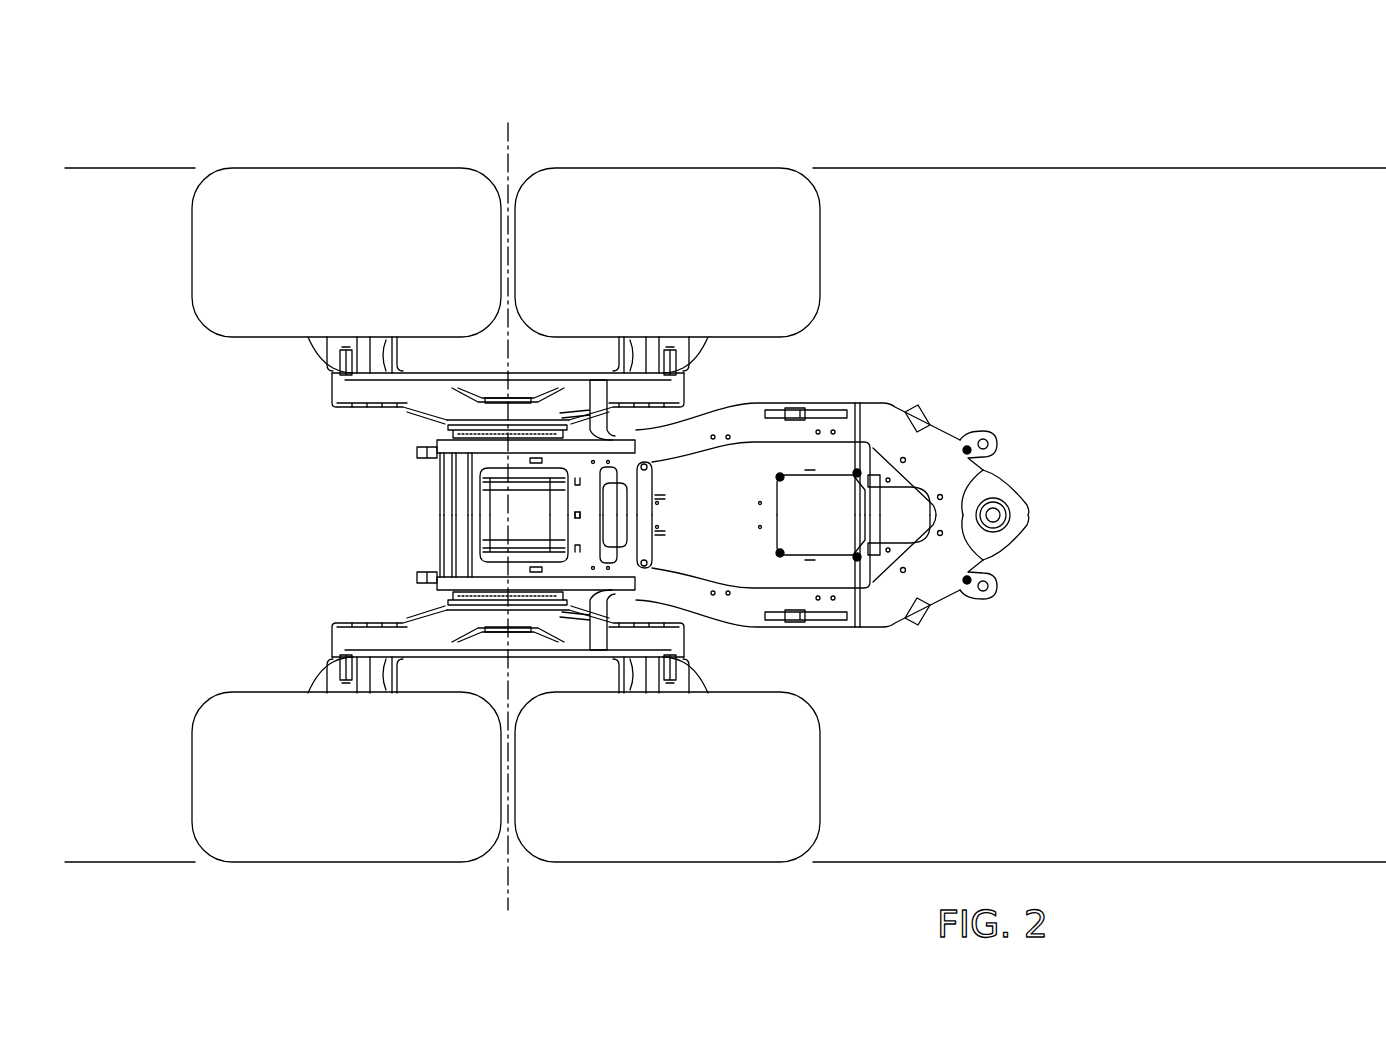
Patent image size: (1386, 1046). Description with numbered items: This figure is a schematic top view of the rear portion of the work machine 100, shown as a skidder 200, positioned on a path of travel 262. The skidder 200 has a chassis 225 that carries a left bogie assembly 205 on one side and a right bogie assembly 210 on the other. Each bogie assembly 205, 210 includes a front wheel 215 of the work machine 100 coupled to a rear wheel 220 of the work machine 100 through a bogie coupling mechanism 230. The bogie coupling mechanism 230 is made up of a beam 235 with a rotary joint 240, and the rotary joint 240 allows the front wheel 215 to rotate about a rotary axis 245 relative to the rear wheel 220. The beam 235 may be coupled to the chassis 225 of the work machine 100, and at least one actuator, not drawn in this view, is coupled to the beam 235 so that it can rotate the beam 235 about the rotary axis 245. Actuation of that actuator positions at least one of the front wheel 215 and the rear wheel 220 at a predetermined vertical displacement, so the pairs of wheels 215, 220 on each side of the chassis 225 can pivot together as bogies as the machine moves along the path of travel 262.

The work machine 100 is at (725, 515).
The skidder 200 is at (907, 168).
The left bogie assembly 205 is at (530, 97).
The right bogie assembly 210 is at (525, 903).
The front wheel 215 is at (683, 247).
The rear wheel 220 is at (373, 248).
The chassis 225 is at (460, 498).
The bogie coupling mechanism 230 is at (339, 427).
The beam 235 is at (492, 392).
The rotary joint 240 is at (453, 427).
The rotary axis 245 is at (509, 150).
The path of travel 262 is at (132, 534).